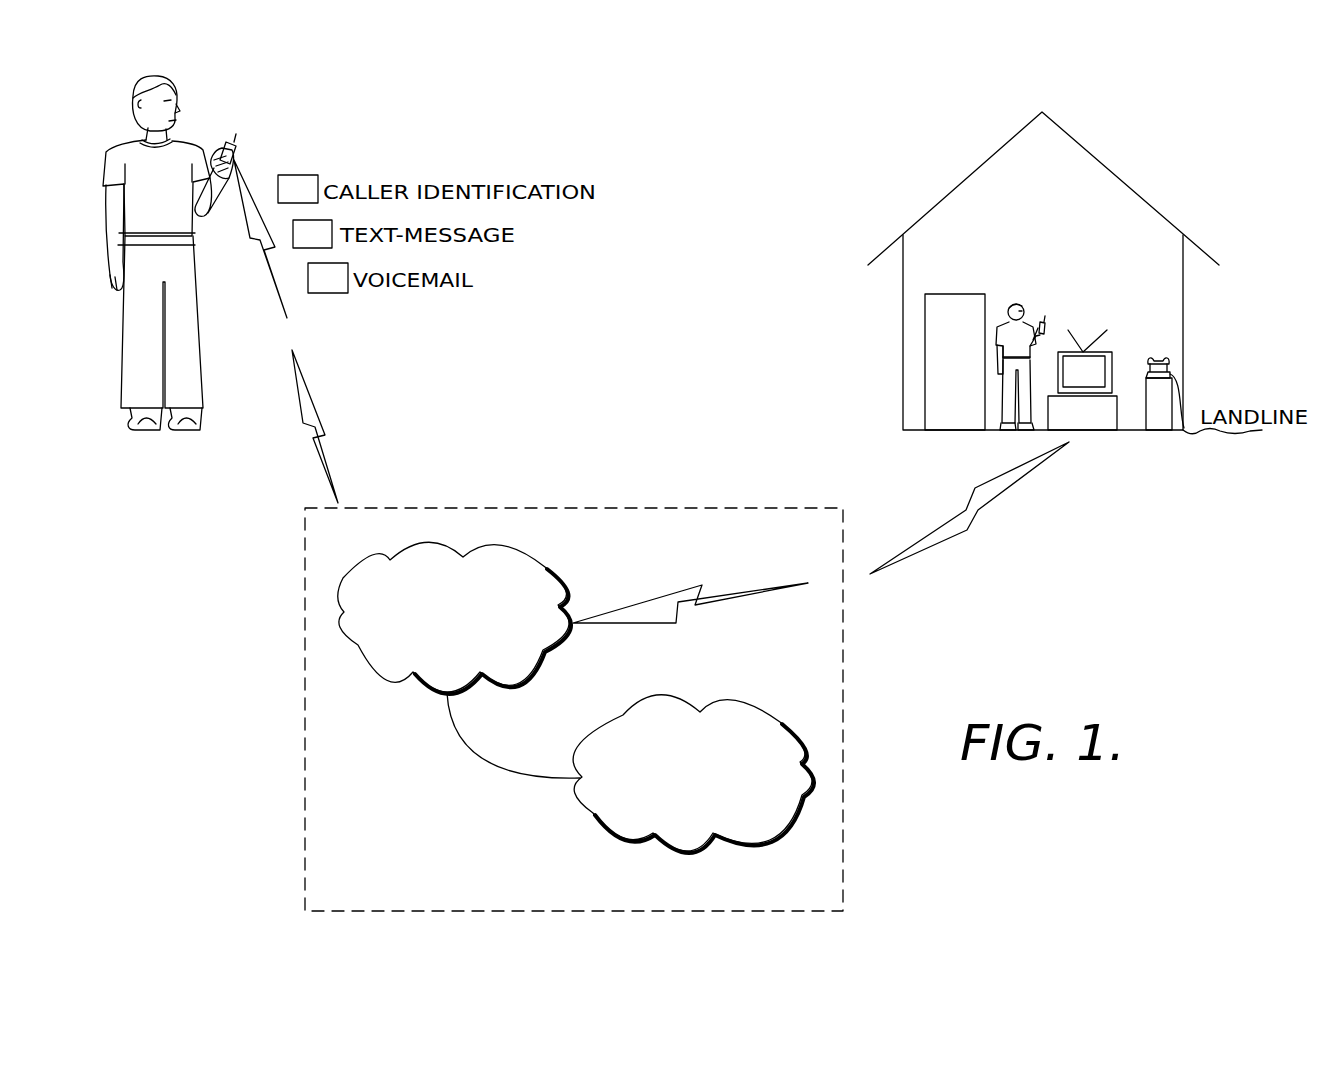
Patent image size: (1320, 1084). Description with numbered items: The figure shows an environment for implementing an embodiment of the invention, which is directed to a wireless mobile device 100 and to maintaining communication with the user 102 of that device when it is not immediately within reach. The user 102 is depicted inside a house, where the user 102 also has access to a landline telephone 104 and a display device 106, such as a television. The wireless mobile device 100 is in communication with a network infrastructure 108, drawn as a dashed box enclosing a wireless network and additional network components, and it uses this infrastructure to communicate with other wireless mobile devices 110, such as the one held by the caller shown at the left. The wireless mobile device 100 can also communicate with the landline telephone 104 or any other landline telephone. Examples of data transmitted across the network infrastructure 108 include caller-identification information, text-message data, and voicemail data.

The wireless mobile device 100 is at (1043, 316).
The user 102 is at (997, 339).
The landline telephone 104 is at (1156, 358).
The display device 106 is at (1085, 349).
The network infrastructure 108 is at (537, 497).
The other wireless mobile devices 110 is at (234, 140).